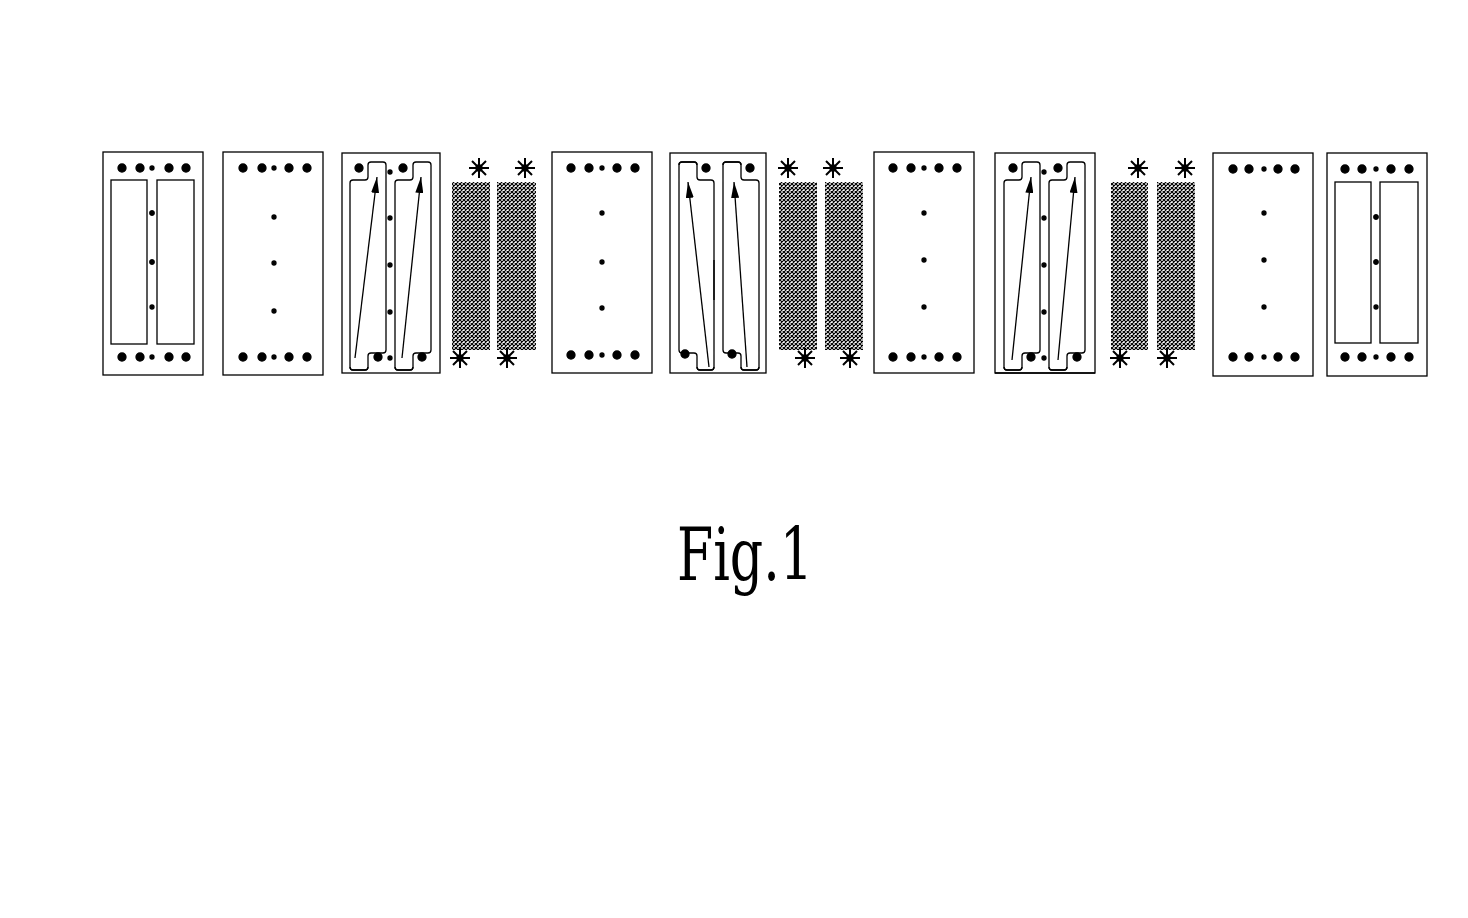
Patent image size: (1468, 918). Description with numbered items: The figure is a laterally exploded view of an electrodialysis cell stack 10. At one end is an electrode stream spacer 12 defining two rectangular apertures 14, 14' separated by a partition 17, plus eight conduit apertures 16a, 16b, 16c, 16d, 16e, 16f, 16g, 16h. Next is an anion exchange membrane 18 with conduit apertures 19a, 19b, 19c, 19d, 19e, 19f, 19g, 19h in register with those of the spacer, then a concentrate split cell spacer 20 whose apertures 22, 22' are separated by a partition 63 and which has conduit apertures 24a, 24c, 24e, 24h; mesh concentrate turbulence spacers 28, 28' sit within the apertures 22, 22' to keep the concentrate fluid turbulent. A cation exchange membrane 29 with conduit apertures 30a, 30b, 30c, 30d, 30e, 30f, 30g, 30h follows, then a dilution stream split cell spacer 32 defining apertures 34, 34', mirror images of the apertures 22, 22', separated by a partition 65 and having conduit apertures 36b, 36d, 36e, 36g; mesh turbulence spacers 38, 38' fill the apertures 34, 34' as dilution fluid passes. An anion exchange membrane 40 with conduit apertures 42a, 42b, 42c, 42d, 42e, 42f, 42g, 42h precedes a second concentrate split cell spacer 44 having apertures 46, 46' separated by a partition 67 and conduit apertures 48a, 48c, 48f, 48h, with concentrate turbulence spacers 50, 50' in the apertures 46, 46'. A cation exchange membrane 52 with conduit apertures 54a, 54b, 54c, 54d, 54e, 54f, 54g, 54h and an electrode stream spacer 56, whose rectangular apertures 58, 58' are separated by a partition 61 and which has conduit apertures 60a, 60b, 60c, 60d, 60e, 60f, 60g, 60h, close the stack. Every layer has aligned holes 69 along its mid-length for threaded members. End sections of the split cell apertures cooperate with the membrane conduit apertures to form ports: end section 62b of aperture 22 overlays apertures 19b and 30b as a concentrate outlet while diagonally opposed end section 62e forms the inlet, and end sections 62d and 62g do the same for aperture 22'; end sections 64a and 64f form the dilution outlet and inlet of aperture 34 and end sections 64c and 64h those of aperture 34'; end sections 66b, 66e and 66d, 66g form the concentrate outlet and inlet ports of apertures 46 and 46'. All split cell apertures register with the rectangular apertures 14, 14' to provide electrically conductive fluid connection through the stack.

The electrodialysis cell stack 10 is at (1018, 503).
The electrode stream spacer 12 is at (112, 160).
The rectangular aperture 14 is at (118, 293).
The rectangular aperture 14' is at (187, 322).
The conduit aperture 16a is at (122, 164).
The conduit aperture 16b is at (140, 164).
The conduit aperture 16c is at (169, 164).
The conduit aperture 16d is at (186, 164).
The conduit aperture 16e is at (122, 361).
The conduit aperture 16f is at (140, 361).
The conduit aperture 16g is at (169, 361).
The conduit aperture 16h is at (186, 361).
The partition 17 is at (162, 290).
The anion exchange membrane 18 is at (233, 160).
The conduit aperture 19a is at (243, 164).
The conduit aperture 19b is at (262, 164).
The conduit aperture 19c is at (289, 164).
The conduit aperture 19d is at (307, 164).
The conduit aperture 19e is at (243, 361).
The conduit aperture 19f is at (262, 361).
The conduit aperture 19g is at (289, 361).
The conduit aperture 19h is at (307, 361).
The concentrate split cell spacer 20 is at (352, 162).
The aperture 22 is at (371, 323).
The aperture 22' is at (431, 320).
The conduit aperture 24a is at (359, 164).
The conduit aperture 24c is at (403, 164).
The conduit aperture 24e is at (379, 361).
The conduit aperture 24h is at (423, 361).
The concentrate turbulence spacer 28 is at (471, 239).
The concentrate turbulence spacer 28' is at (521, 238).
The cation exchange membrane 29 is at (556, 178).
The conduit aperture 30a is at (571, 164).
The conduit aperture 30b is at (589, 164).
The conduit aperture 30c is at (617, 164).
The conduit aperture 30d is at (635, 164).
The conduit aperture 30e is at (571, 359).
The conduit aperture 30f is at (589, 359).
The conduit aperture 30g is at (617, 359).
The conduit aperture 30h is at (635, 359).
The dilution stream split cell spacer 32 is at (764, 357).
The aperture 34 is at (682, 213).
The aperture 34' is at (762, 225).
The conduit aperture 36b is at (706, 164).
The conduit aperture 36d is at (750, 164).
The conduit aperture 36e is at (685, 358).
The conduit aperture 36g is at (732, 358).
The dilution stream turbulence spacer 38 is at (798, 241).
The turbulence spacer 38' is at (845, 239).
The anion exchange membrane 40 is at (882, 165).
The conduit aperture 42a is at (893, 164).
The conduit aperture 42b is at (911, 164).
The conduit aperture 42c is at (939, 164).
The conduit aperture 42d is at (957, 164).
The conduit aperture 42e is at (893, 361).
The conduit aperture 42f is at (911, 361).
The conduit aperture 42g is at (939, 361).
The conduit aperture 42h is at (957, 361).
The concentrate split cell spacer 44 is at (1002, 160).
The aperture 46 is at (1026, 323).
The aperture 46' is at (1088, 316).
The conduit aperture 48a is at (1013, 164).
The conduit aperture 48c is at (1058, 164).
The conduit aperture 48f is at (1032, 361).
The conduit aperture 48h is at (1078, 361).
The concentrate turbulence spacer 50 is at (1129, 242).
The concentrate turbulence spacer 50' is at (1175, 241).
The cation exchange membrane 52 is at (1220, 158).
The conduit aperture 54a is at (1233, 165).
The conduit aperture 54b is at (1249, 165).
The conduit aperture 54c is at (1278, 165).
The conduit aperture 54d is at (1295, 165).
The conduit aperture 54e is at (1233, 361).
The conduit aperture 54f is at (1249, 361).
The conduit aperture 54g is at (1278, 361).
The conduit aperture 54h is at (1295, 361).
The electrode stream spacer 56 is at (1333, 158).
The rectangular aperture 58 is at (1338, 323).
The rectangular aperture 58' is at (1415, 321).
The conduit aperture 60a is at (1345, 165).
The conduit aperture 60b is at (1362, 165).
The conduit aperture 60c is at (1391, 165).
The conduit aperture 60d is at (1409, 165).
The conduit aperture 60e is at (1345, 361).
The conduit aperture 60f is at (1362, 361).
The conduit aperture 60g is at (1391, 361).
The conduit aperture 60h is at (1409, 361).
The partition 61 is at (1375, 292).
The first end section 62b is at (383, 161).
The first end section 62d is at (428, 161).
The second end section 62e is at (354, 372).
The second end section 62g is at (405, 372).
The partition 63 is at (390, 282).
The first end section 64a is at (686, 160).
The first end section 64c is at (732, 160).
The second end section 64f is at (705, 372).
The second end section 64h is at (750, 372).
The partition 65 is at (718, 277).
The first end section 66b is at (1033, 161).
The first end section 66d is at (1080, 161).
The second end section 66e is at (1008, 372).
The second end section 66g is at (1058, 372).
The partition 67 is at (1047, 282).
The aligned holes 69 is at (153, 262).